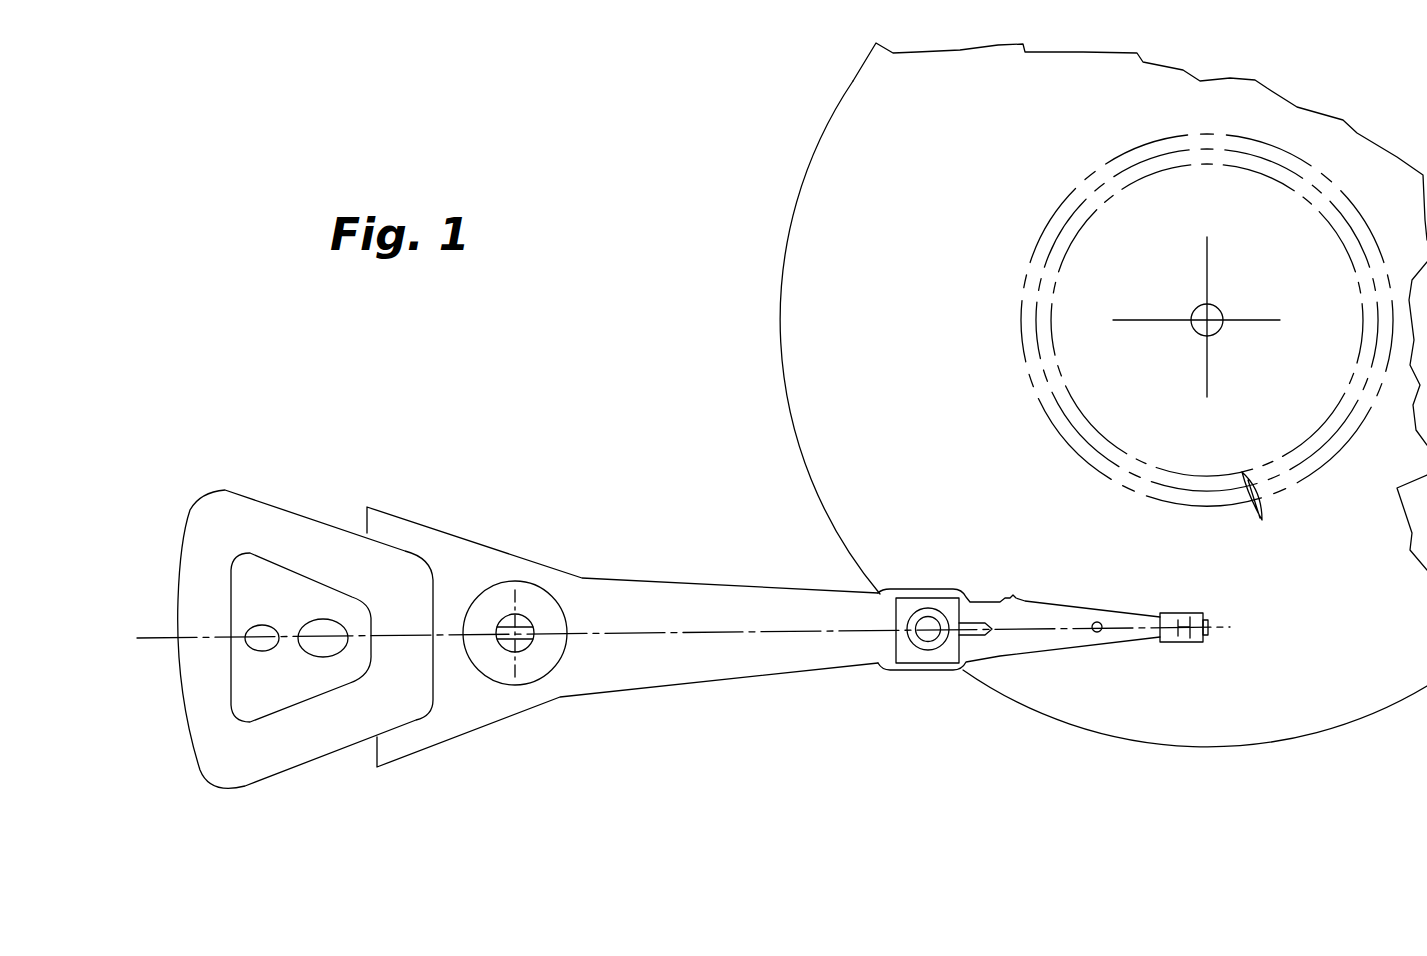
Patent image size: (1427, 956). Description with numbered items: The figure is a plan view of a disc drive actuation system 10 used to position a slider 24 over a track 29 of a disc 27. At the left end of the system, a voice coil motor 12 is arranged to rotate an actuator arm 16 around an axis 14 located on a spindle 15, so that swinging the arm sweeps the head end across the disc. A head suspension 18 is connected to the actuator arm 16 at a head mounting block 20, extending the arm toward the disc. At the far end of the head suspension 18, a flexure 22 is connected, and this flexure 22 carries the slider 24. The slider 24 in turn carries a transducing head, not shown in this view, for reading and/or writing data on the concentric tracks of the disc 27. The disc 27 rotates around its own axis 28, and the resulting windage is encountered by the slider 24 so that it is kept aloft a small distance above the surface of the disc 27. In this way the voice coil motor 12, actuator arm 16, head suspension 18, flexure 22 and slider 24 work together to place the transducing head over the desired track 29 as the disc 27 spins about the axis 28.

The disc drive actuation system 10 is at (683, 511).
The voice coil motor 12 is at (203, 494).
The axis 14 is at (524, 646).
The spindle 15 is at (505, 617).
The actuator arm 16 is at (767, 586).
The head suspension 18 is at (1090, 603).
The head mounting block 20 is at (932, 598).
The flexure 22 is at (1189, 613).
The slider 24 is at (1208, 628).
The disc 27 is at (791, 436).
The axis 28 is at (1194, 309).
The track 29 is at (1262, 520).